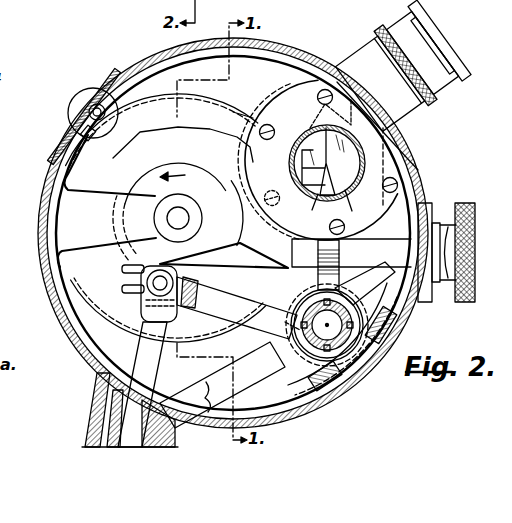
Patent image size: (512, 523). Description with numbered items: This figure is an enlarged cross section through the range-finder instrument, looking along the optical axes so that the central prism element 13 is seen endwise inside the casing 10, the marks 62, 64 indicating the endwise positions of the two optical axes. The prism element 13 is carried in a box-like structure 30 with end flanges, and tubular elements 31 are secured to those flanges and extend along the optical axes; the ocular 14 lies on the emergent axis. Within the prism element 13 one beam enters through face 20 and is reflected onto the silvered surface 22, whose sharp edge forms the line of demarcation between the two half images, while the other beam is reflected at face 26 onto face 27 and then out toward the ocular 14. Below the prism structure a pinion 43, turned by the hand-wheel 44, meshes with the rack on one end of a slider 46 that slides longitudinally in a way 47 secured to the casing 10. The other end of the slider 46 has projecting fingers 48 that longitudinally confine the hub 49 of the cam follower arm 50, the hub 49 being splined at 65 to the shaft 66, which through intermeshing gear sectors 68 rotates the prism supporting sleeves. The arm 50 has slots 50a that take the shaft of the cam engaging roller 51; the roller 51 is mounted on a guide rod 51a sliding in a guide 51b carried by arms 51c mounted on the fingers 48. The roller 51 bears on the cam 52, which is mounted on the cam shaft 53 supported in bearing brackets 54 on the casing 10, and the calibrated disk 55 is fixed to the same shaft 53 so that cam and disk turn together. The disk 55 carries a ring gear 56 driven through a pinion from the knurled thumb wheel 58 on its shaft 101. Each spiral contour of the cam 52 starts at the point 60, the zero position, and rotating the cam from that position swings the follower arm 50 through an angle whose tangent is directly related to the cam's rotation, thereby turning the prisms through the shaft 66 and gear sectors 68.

The casing 10 is at (430, 166).
The central prism element 13 is at (300, 153).
The ocular 14 is at (441, 101).
The entrance face 20 is at (331, 152).
The silvered surface 22 is at (334, 115).
The reflecting face 26 is at (298, 166).
The reflecting face 27 is at (302, 136).
The box-like structure 30 is at (290, 97).
The tubular elements 31 is at (312, 140).
The pinion 43 is at (345, 249).
The hand-wheel 44 is at (464, 202).
The slider 46 is at (343, 366).
The way 47 is at (73, 0).
The projecting fingers 48 is at (300, 338).
The hub 49 is at (296, 311).
The cam follower arm 50 is at (237, 308).
The slots 50a is at (134, 291).
The cam engaging roller 51 is at (136, 279).
The guide rod 51a is at (143, 348).
The guide 51b is at (107, 412).
The arms 51c is at (215, 380).
The cam 52 is at (166, 148).
The cam shaft 53 is at (186, 212).
The bearing brackets 54 is at (110, 180).
The calibrated disk 55 is at (196, 118).
The ring gear 56 is at (232, 111).
The knurled thumb wheel 58 is at (88, 93).
The zero point 60 is at (224, 255).
The pin 62 is at (356, 209).
The pin 64 is at (314, 210).
The spline 65 is at (342, 300).
The shaft 66 is at (300, 356).
The gear sectors 68 is at (376, 306).
The shaft 101 is at (100, 119).